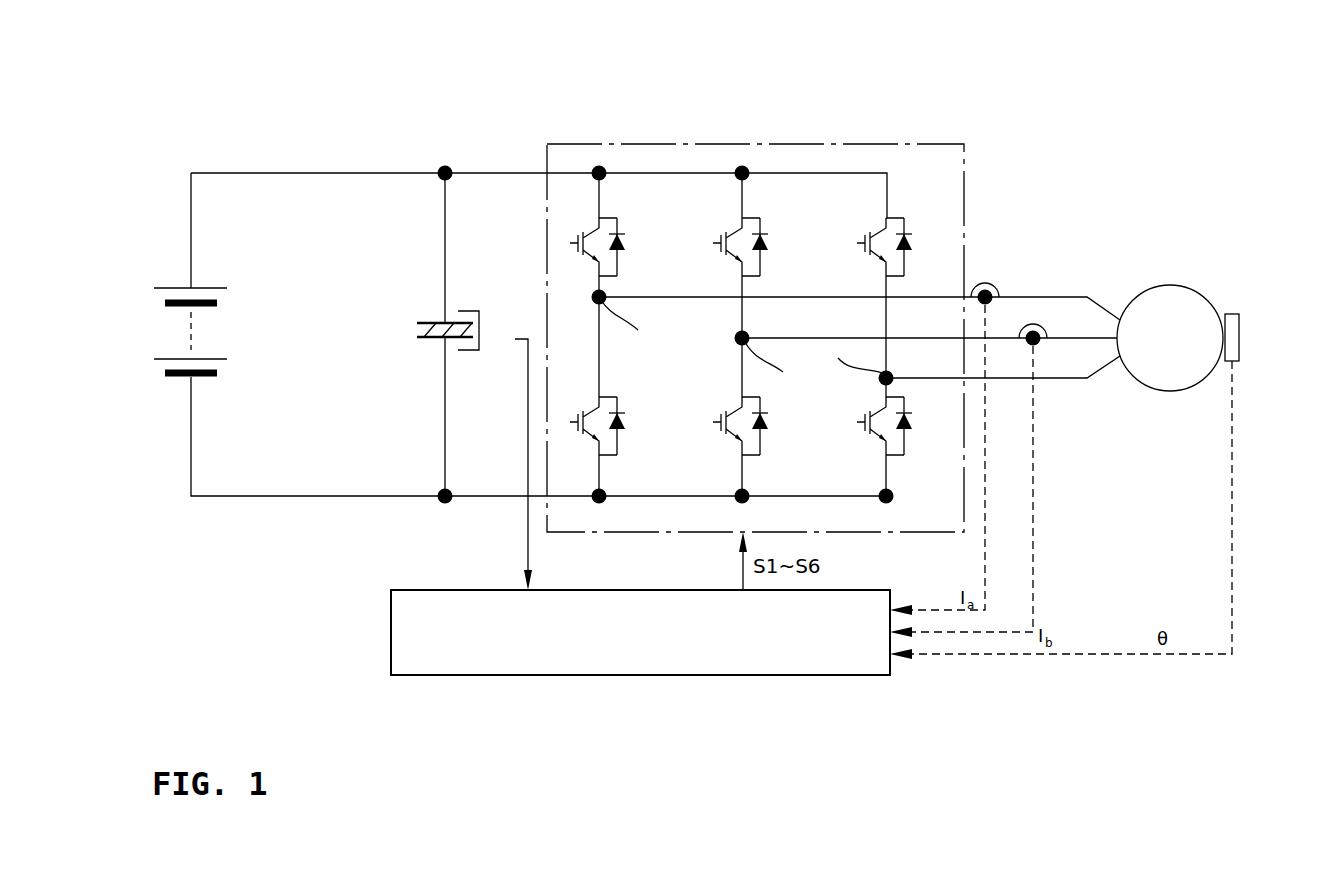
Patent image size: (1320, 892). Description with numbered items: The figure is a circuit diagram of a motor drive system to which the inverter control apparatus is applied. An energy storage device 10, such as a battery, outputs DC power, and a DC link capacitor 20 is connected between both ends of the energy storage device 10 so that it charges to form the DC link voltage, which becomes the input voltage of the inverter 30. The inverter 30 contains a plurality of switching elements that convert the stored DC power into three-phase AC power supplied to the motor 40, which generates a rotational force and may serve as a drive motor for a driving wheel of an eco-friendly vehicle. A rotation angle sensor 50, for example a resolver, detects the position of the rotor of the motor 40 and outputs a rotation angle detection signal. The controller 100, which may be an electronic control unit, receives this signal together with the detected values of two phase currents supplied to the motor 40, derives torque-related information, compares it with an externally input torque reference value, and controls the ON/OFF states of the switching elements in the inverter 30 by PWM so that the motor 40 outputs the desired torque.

The energy storage device 10 is at (172, 378).
The DC link capacitor 20 is at (423, 323).
The inverter 30 is at (755, 142).
The motor 40 is at (1170, 283).
The rotation angle sensor 50 is at (1232, 314).
The controller 100 is at (640, 675).